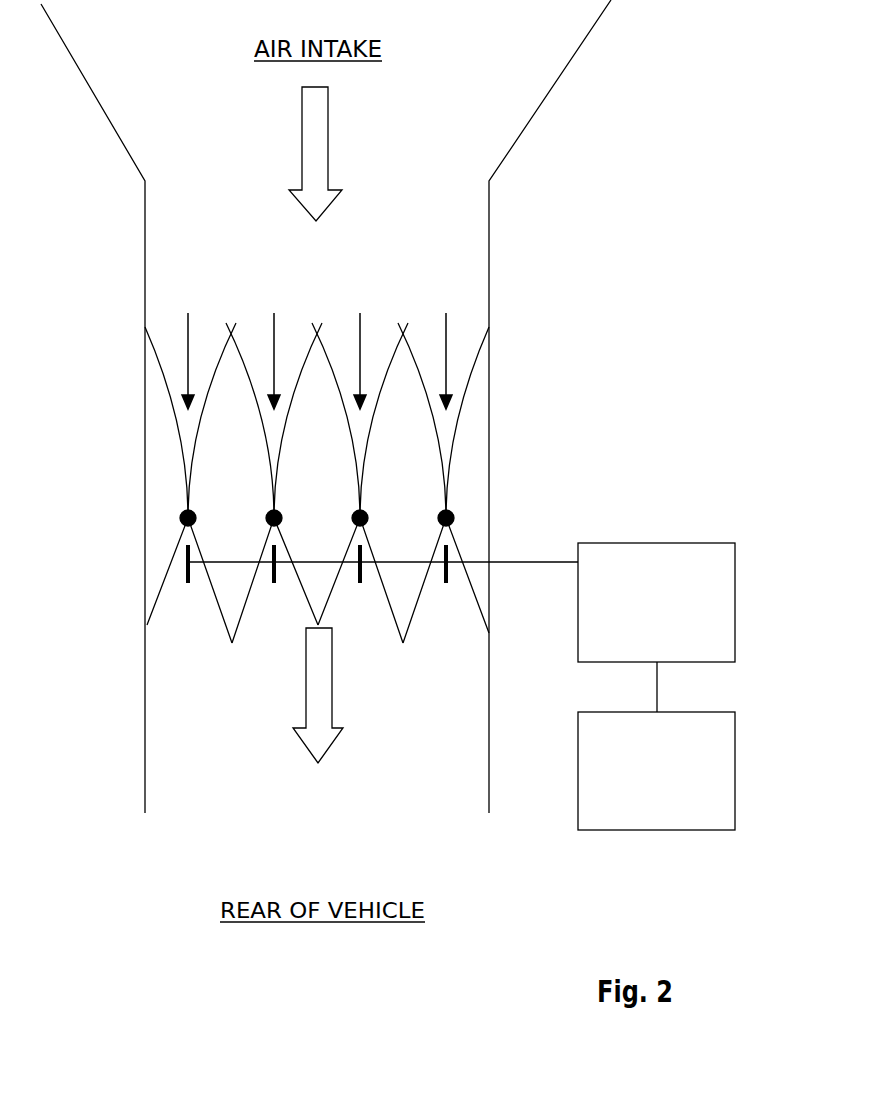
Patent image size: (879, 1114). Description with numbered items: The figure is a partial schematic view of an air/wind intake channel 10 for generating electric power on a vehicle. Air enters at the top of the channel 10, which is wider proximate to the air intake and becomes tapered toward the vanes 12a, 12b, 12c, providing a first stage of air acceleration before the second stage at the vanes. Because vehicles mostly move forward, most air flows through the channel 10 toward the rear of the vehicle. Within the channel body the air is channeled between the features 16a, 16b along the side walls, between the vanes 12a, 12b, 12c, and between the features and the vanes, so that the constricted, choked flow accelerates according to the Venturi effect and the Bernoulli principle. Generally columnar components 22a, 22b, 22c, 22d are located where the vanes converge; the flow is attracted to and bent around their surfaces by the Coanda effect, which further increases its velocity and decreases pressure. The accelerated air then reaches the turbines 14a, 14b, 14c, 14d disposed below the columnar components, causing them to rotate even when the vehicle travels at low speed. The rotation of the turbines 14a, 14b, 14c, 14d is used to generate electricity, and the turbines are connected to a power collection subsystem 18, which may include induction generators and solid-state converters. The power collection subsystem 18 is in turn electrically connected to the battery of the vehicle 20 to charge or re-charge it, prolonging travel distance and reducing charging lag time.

The air/wind intake channel 10 is at (223, 163).
The vane 12a is at (233, 358).
The vane 12b is at (318, 358).
The vane 12c is at (405, 358).
The turbine 14a is at (183, 577).
The turbine 14b is at (268, 577).
The turbine 14c is at (355, 578).
The turbine 14d is at (442, 578).
The feature 16a is at (167, 425).
The feature 16b is at (473, 425).
The power collection subsystem 18 is at (610, 543).
The battery of the vehicle 20 is at (685, 712).
The generally columnar component 22a is at (180, 518).
The generally columnar component 22b is at (266, 518).
The generally columnar component 22c is at (368, 514).
The generally columnar component 22d is at (454, 524).